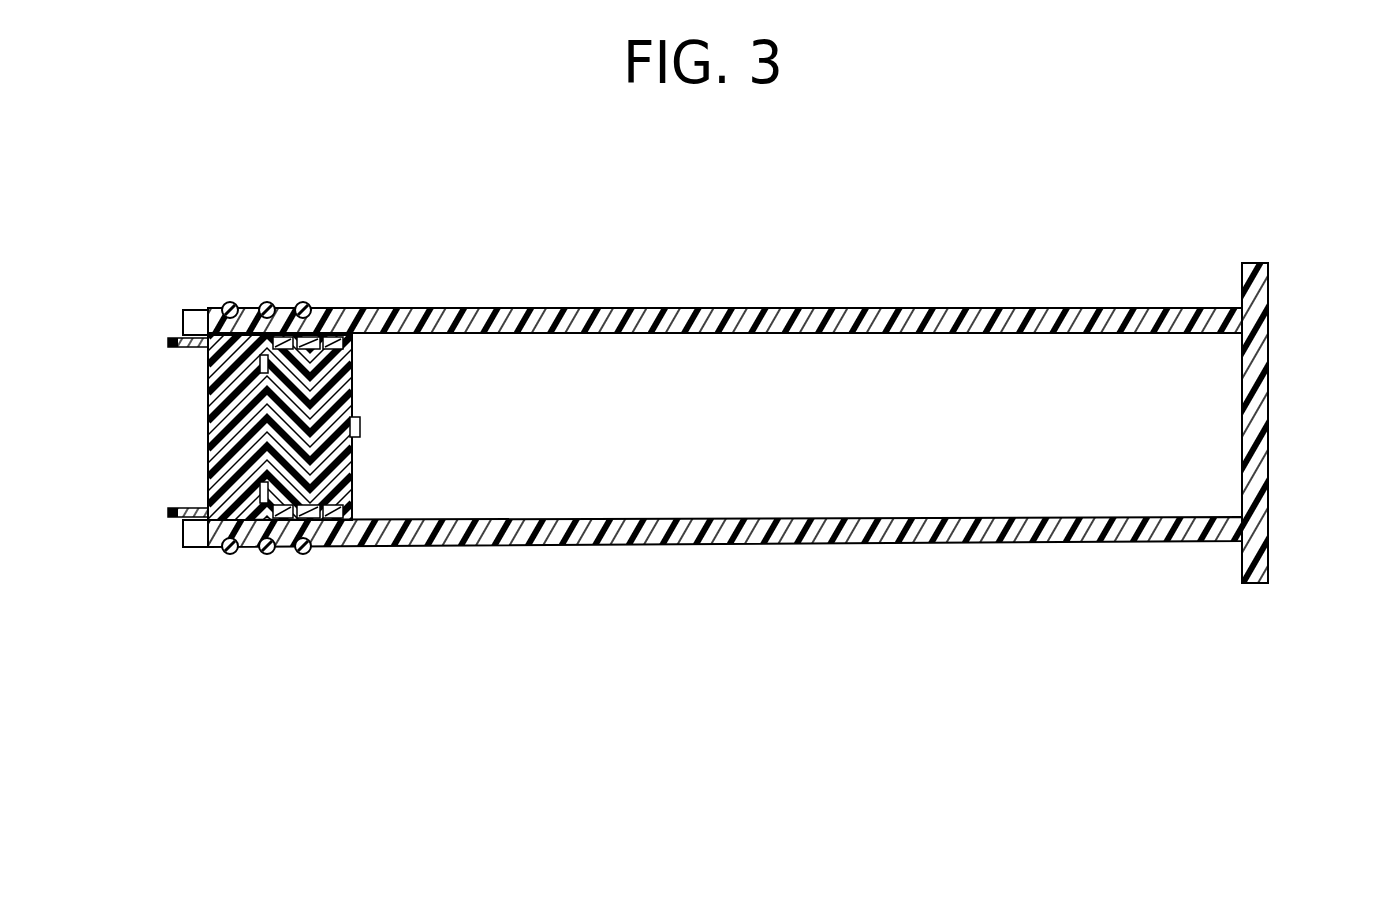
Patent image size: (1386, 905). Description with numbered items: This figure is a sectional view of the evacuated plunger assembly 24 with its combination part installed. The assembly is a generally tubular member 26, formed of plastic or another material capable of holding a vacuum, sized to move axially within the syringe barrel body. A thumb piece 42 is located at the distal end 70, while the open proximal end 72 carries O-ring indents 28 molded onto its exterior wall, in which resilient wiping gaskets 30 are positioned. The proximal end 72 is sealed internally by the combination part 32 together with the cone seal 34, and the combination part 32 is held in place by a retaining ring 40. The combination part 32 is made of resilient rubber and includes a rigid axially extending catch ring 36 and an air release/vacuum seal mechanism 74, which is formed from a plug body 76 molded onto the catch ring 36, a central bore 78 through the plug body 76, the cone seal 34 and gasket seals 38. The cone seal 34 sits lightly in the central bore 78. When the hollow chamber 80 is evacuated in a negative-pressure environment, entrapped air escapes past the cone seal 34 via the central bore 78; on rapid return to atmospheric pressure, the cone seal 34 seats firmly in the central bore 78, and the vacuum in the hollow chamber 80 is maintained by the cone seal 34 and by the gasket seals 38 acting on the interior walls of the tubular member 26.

The evacuated plunger assembly 24 is at (678, 207).
The tubular member 26 is at (808, 307).
The O-ring indents 28 is at (232, 302).
The wiping gaskets 30 is at (302, 556).
The combination part 32 is at (210, 487).
The cone seal 34 is at (360, 420).
The catch ring 36 is at (180, 342).
The gasket seals 38 is at (286, 356).
The retaining ring 40 is at (197, 308).
The thumb piece 42 is at (1268, 325).
The distal end 70 is at (1210, 547).
The open proximal end 72 is at (218, 548).
The air release/vacuum seal mechanism 74 is at (210, 430).
The plug body 76 is at (336, 487).
The central bore 78 is at (346, 455).
The hollow chamber 80 is at (916, 451).